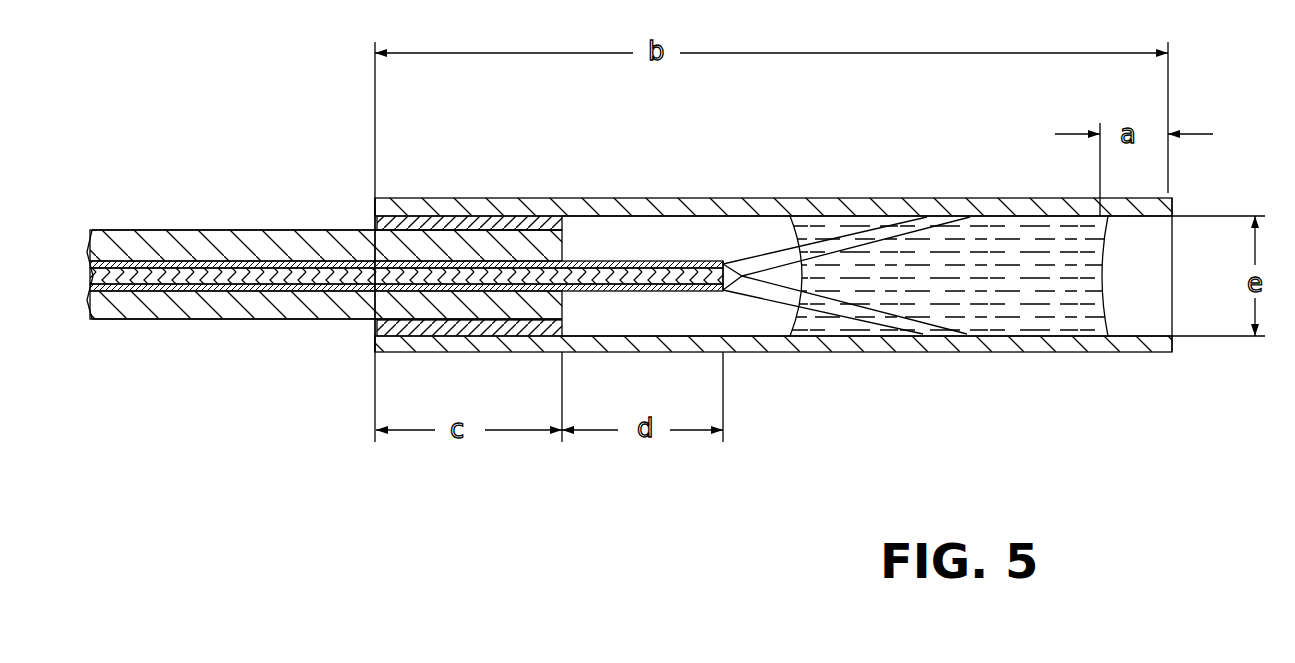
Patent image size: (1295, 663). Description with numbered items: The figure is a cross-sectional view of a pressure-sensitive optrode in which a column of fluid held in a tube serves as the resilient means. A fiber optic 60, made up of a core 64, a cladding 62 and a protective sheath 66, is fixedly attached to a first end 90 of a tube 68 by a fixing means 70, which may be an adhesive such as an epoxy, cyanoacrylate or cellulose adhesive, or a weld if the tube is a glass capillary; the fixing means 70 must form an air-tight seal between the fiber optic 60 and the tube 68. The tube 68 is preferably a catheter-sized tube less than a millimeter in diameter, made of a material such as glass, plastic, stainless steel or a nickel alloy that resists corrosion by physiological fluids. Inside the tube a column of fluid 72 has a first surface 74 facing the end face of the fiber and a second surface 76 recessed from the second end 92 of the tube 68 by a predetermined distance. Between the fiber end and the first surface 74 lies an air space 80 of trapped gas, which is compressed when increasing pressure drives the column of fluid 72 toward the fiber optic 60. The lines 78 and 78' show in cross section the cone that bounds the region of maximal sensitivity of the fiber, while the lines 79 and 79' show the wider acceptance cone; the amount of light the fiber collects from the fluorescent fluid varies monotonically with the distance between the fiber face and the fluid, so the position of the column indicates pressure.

The fiber optic 60 is at (233, 212).
The cladding 62 is at (258, 291).
The core 64 is at (208, 277).
The protective sheath 66 is at (143, 230).
The tube 68 is at (995, 352).
The fixing means 70 is at (375, 220).
The column of fluid 72 is at (973, 285).
The first surface 74 is at (790, 216).
The second surface 76 is at (1102, 262).
The line of region of maximal sensitivity 78 is at (845, 343).
The line of region of maximal sensitivity 78' is at (829, 197).
The line of acceptance cone 79 is at (823, 352).
The line of acceptance cone 79' is at (782, 206).
The air space 80 is at (697, 251).
The first end of tube 90 is at (468, 155).
The second end of tube 92 is at (1098, 375).